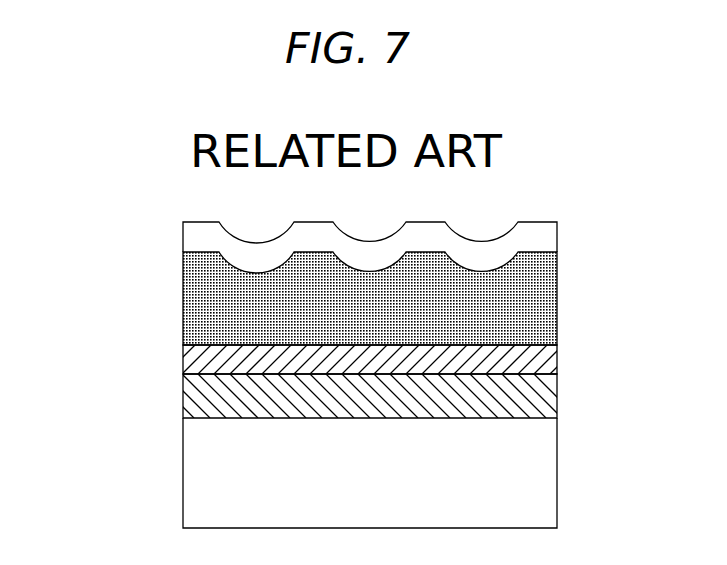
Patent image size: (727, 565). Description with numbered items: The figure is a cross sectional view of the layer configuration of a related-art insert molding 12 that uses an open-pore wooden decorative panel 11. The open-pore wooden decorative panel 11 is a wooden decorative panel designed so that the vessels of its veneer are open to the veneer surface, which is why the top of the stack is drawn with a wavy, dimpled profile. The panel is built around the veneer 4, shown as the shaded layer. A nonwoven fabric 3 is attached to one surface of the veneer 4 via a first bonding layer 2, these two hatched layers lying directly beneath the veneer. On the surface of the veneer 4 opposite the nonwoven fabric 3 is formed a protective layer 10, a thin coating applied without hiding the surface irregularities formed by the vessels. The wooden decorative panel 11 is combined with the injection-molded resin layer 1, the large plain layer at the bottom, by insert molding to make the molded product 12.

The injection-molded resin layer 1 is at (549, 468).
The first bonding layer 2 is at (553, 389).
The nonwoven fabric 3 is at (551, 358).
The veneer 4 is at (556, 297).
The protective layer 10 is at (547, 237).
The open-pore wooden decorative panel 11 is at (371, 335).
The insert molding 12 is at (333, 361).